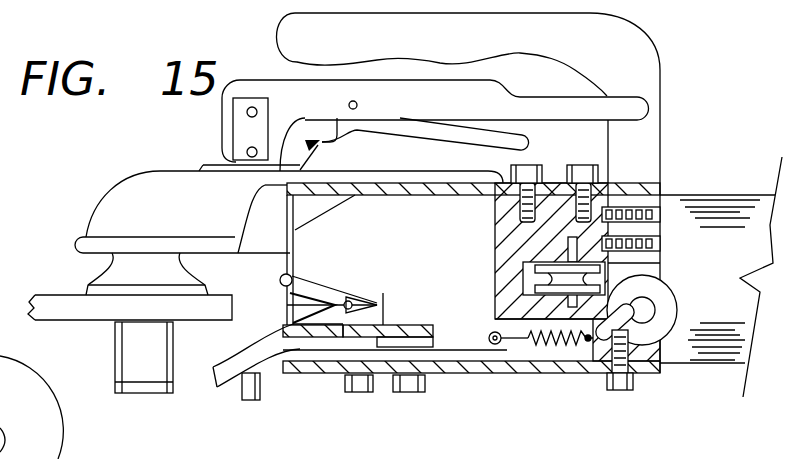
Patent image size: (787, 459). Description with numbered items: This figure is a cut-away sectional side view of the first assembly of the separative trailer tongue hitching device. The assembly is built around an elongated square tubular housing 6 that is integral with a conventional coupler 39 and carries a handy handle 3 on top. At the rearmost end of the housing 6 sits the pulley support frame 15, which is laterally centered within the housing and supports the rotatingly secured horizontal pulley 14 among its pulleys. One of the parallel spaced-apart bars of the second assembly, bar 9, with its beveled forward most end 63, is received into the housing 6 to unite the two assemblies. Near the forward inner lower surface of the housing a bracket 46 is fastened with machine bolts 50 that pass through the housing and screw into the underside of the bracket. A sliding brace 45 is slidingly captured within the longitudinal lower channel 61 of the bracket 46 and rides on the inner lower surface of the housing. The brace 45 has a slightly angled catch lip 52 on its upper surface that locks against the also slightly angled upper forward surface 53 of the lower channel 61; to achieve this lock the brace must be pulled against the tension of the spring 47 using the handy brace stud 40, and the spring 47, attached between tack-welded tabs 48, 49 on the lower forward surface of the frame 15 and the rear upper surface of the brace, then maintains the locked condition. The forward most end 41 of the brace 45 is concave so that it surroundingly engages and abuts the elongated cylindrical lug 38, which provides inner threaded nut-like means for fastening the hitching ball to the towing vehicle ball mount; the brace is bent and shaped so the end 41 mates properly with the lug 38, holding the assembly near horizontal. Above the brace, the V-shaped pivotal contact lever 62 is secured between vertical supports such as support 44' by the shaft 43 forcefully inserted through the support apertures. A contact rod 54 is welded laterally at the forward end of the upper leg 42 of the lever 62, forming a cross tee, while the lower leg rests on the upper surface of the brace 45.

The handle 3 is at (650, 54).
The bar 9 is at (397, 210).
The pulley support frame 15 is at (544, 210).
The coupler 39 is at (160, 172).
The beveled forward most end 63 is at (290, 243).
The shaft 43 is at (349, 300).
The upper leg 42 is at (312, 288).
The vertical support 44' is at (382, 285).
The contact rod 54 is at (280, 280).
The V-shaped pivotal contact lever 62 is at (308, 305).
The upper forward surface 53 is at (270, 333).
The lug 38 is at (138, 343).
The forward most end 41 is at (213, 378).
The brace stud 40 is at (250, 403).
The sliding brace 45 is at (333, 350).
The bracket 46 is at (355, 330).
The machine bolt 50 is at (403, 400).
The horizontal pulley 14 is at (482, 263).
The housing 6 is at (508, 373).
The tab 48 is at (505, 342).
The spring 47 is at (552, 345).
The tab 49 is at (587, 362).
The lower channel 61 is at (432, 343).
The catch lip 52 is at (390, 337).